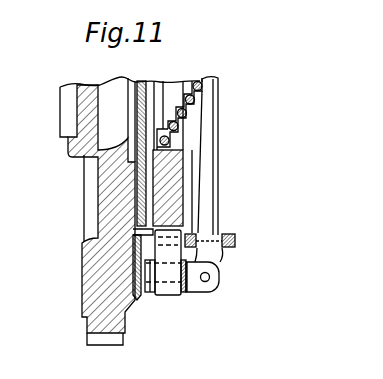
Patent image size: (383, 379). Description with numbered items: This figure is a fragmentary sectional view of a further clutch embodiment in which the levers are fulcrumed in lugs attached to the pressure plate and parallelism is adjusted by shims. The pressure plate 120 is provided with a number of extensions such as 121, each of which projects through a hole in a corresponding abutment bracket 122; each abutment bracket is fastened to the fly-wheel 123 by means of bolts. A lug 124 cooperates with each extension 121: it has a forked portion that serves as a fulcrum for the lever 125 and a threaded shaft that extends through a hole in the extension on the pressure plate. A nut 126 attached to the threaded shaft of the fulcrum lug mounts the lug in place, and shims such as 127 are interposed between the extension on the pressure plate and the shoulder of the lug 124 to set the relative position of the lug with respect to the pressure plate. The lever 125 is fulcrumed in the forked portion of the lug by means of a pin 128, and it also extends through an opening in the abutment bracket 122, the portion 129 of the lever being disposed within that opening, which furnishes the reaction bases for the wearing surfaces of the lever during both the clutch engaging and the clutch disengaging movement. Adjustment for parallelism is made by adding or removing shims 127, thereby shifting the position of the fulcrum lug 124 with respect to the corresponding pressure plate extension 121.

The pressure plate 120 is at (200, 165).
The extension 121 is at (172, 296).
The abutment bracket 122 is at (140, 298).
The fly-wheel 123 is at (92, 298).
The lug 124 is at (192, 288).
The lever 125 is at (211, 180).
The nut 126 is at (137, 266).
The shims 127 is at (184, 297).
The pin 128 is at (221, 285).
The portion of the lever 129 is at (218, 233).